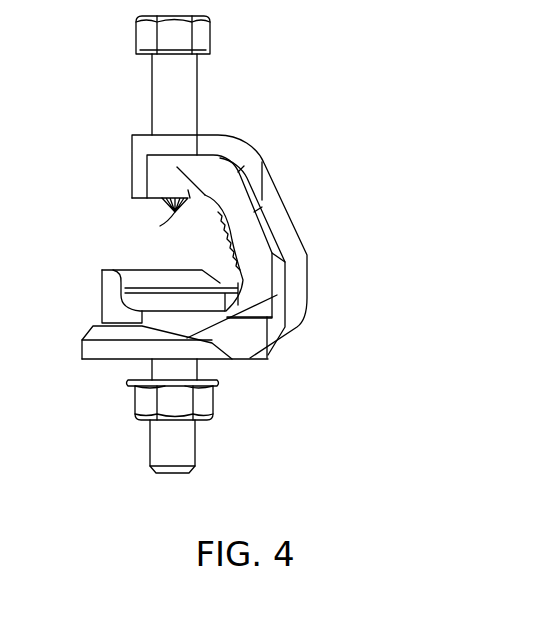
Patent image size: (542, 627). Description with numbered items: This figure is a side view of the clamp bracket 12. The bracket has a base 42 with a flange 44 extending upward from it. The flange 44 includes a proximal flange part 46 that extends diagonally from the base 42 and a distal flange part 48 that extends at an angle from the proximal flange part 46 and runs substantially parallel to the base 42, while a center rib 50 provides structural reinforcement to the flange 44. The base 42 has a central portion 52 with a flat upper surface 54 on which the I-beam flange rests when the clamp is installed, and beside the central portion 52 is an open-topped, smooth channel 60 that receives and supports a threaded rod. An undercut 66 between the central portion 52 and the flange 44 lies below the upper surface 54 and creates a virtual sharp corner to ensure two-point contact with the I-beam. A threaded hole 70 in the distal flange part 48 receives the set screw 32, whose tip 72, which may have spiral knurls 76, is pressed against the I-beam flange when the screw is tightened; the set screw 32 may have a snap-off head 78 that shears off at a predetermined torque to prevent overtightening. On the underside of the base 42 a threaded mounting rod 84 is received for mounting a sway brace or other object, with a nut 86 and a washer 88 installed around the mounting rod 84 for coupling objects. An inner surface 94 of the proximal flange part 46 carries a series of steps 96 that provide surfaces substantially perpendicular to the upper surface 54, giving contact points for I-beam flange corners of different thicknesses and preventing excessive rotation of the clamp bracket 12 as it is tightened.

The clamp bracket 12 is at (284, 138).
The set screw 32 is at (185, 84).
The base 42 is at (290, 350).
The flange 44 is at (297, 169).
The proximal flange part 46 is at (250, 247).
The distal flange part 48 is at (175, 183).
The center rib 50 is at (277, 197).
The central portion 52 is at (108, 289).
The upper surface 54 is at (108, 268).
The channel 60 is at (193, 302).
The undercut 66 is at (232, 270).
The threaded hole 70 is at (212, 122).
The tip 72 is at (175, 214).
The spiral knurls 76 is at (158, 211).
The snap-off head 78 is at (207, 32).
The threaded mounting rod 84 is at (185, 452).
The nut 86 is at (203, 408).
The washer 88 is at (127, 384).
The inner surface 94 is at (228, 265).
The steps 96 is at (206, 239).